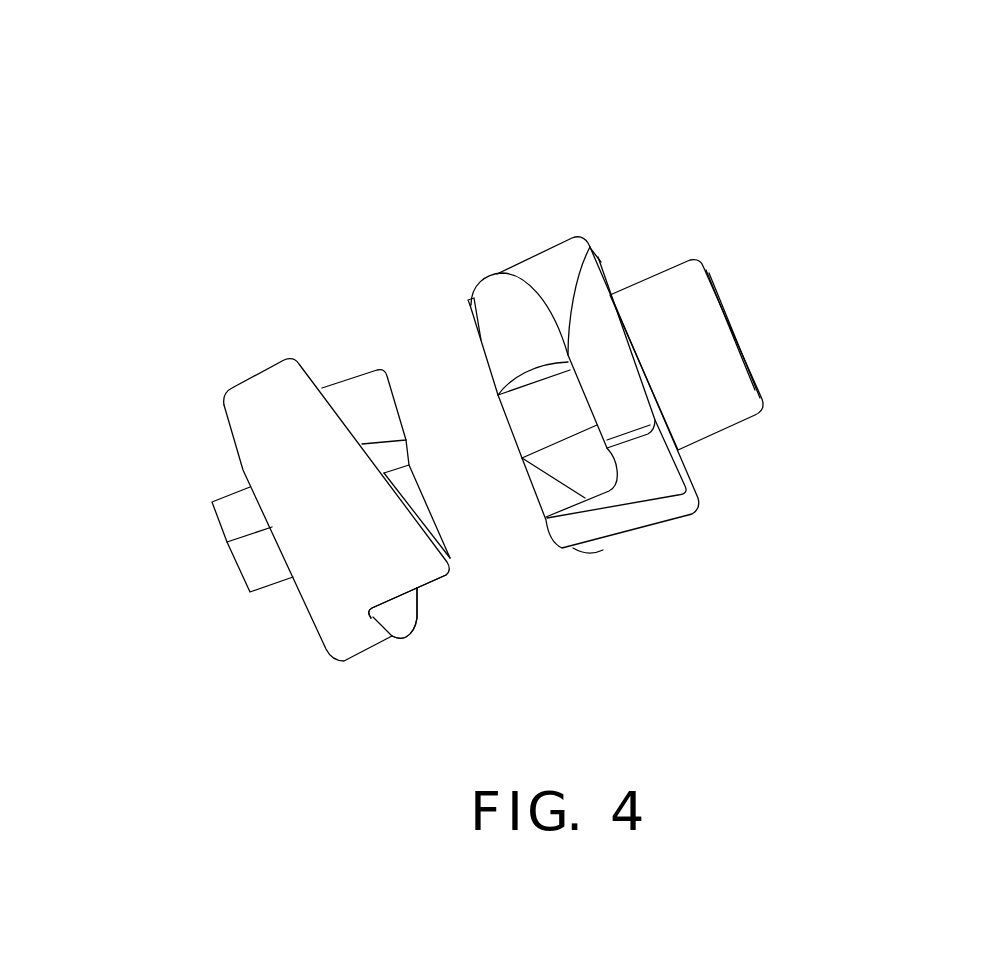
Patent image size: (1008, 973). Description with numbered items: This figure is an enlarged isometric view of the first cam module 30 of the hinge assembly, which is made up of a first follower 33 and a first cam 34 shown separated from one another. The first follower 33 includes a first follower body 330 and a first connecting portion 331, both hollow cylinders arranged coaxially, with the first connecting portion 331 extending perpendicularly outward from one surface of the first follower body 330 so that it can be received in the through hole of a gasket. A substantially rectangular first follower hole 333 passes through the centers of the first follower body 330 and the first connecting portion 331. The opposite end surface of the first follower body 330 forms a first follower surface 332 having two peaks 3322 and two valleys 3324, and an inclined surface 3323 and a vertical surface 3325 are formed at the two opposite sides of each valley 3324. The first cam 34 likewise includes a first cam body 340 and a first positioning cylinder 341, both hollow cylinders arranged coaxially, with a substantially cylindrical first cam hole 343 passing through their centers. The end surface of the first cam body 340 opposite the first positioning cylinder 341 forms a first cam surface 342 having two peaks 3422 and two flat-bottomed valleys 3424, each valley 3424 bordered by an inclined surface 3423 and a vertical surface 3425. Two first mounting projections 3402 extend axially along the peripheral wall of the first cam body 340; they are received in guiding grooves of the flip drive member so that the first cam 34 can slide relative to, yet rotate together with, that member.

The first cam module 30 is at (528, 32).
The first follower 33 is at (280, 648).
The first follower body 330 is at (238, 396).
The first connecting portion 331 is at (240, 577).
The first follower surface 332 is at (576, 577).
The peak 3322 is at (450, 574).
The inclined surface 3323 is at (408, 498).
The valley 3324 is at (374, 617).
The vertical surface 3325 is at (432, 583).
The first follower hole 333 is at (237, 513).
The first cam 34 is at (801, 396).
The first cam body 340 is at (660, 538).
The first mounting projection 3402 is at (662, 478).
The first positioning cylinder 341 is at (710, 242).
The first cam surface 342 is at (657, 134).
The peak 3422 is at (471, 305).
The inclined surface 3423 is at (533, 323).
The valley 3424 is at (590, 247).
The vertical surface 3425 is at (522, 458).
The first cam hole 343 is at (728, 305).